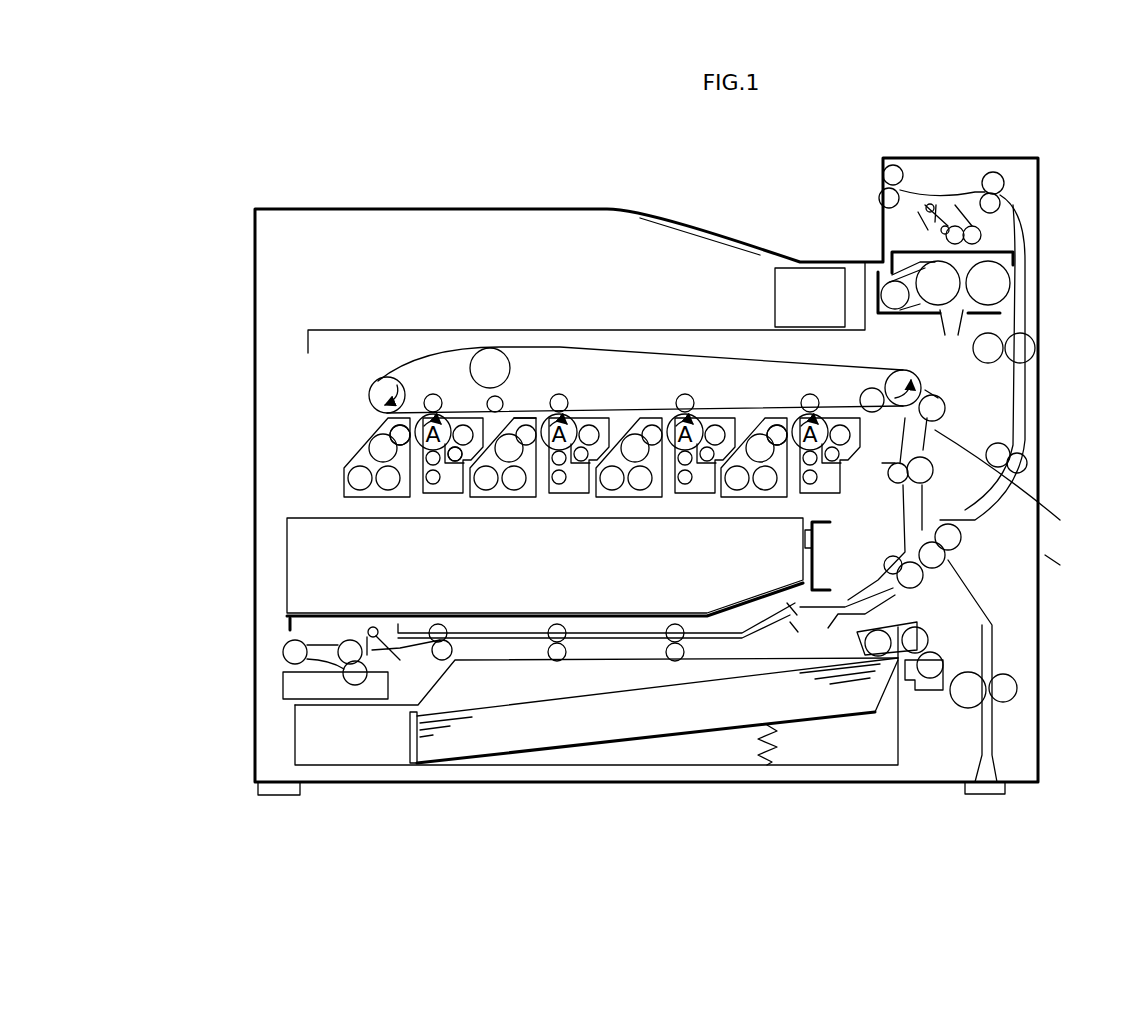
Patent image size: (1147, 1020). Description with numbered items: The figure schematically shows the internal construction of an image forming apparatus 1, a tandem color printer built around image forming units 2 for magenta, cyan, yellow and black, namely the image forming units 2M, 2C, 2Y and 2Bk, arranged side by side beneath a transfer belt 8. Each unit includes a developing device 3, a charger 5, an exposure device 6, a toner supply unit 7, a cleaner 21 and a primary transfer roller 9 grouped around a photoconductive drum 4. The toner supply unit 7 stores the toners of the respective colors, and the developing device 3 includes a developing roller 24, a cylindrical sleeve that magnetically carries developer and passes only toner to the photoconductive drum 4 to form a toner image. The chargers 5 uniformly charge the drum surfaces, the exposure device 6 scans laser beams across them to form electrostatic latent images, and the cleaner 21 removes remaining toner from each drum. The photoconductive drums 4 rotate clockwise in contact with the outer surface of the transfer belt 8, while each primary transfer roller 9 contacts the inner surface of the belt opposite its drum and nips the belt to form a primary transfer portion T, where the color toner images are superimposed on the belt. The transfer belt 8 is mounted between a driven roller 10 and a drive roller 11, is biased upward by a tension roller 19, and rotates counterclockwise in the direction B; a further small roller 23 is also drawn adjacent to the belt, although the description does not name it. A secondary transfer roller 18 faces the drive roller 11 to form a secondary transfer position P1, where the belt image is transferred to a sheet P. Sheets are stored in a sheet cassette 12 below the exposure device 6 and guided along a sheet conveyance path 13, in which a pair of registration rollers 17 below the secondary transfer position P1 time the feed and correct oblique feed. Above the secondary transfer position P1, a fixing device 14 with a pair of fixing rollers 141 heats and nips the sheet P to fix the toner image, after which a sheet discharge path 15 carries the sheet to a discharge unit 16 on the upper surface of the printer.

The image forming apparatus 1 is at (296, 136).
The image forming units 2 is at (742, 141).
The image forming unit for magenta 2M is at (460, 402).
The image forming unit for cyan 2C is at (588, 400).
The image forming unit for yellow 2Y is at (658, 400).
The image forming unit for black 2Bk is at (785, 402).
The developing device 3 is at (383, 492).
The photoconductive drum 4 is at (424, 444).
The charger 5 is at (445, 487).
The exposure device 6 is at (295, 578).
The toner supply unit 7 is at (811, 283).
The transfer belt 8 is at (535, 418).
The primary transfer roller 9 is at (436, 395).
The driven roller 10 is at (395, 383).
The drive roller 11 is at (916, 380).
The sheet cassette 12 is at (637, 784).
The sheet conveyance path 13 is at (962, 558).
The fixing device 14 is at (1010, 246).
The fixing rollers 141 is at (1003, 280).
The sheet discharge path 15 is at (922, 200).
The discharge unit 16 is at (763, 247).
The registration rollers 17 is at (932, 472).
The secondary transfer roller 18 is at (942, 414).
The tension roller 19 is at (490, 348).
The cleaner 21 is at (487, 468).
The belt roller 23 is at (510, 398).
The developing roller 24 is at (392, 432).
The rotating direction of the transfer belt B is at (802, 372).
The primary transfer portion T is at (568, 395).
The sheet P is at (808, 675).
The secondary transfer position P1 is at (946, 402).